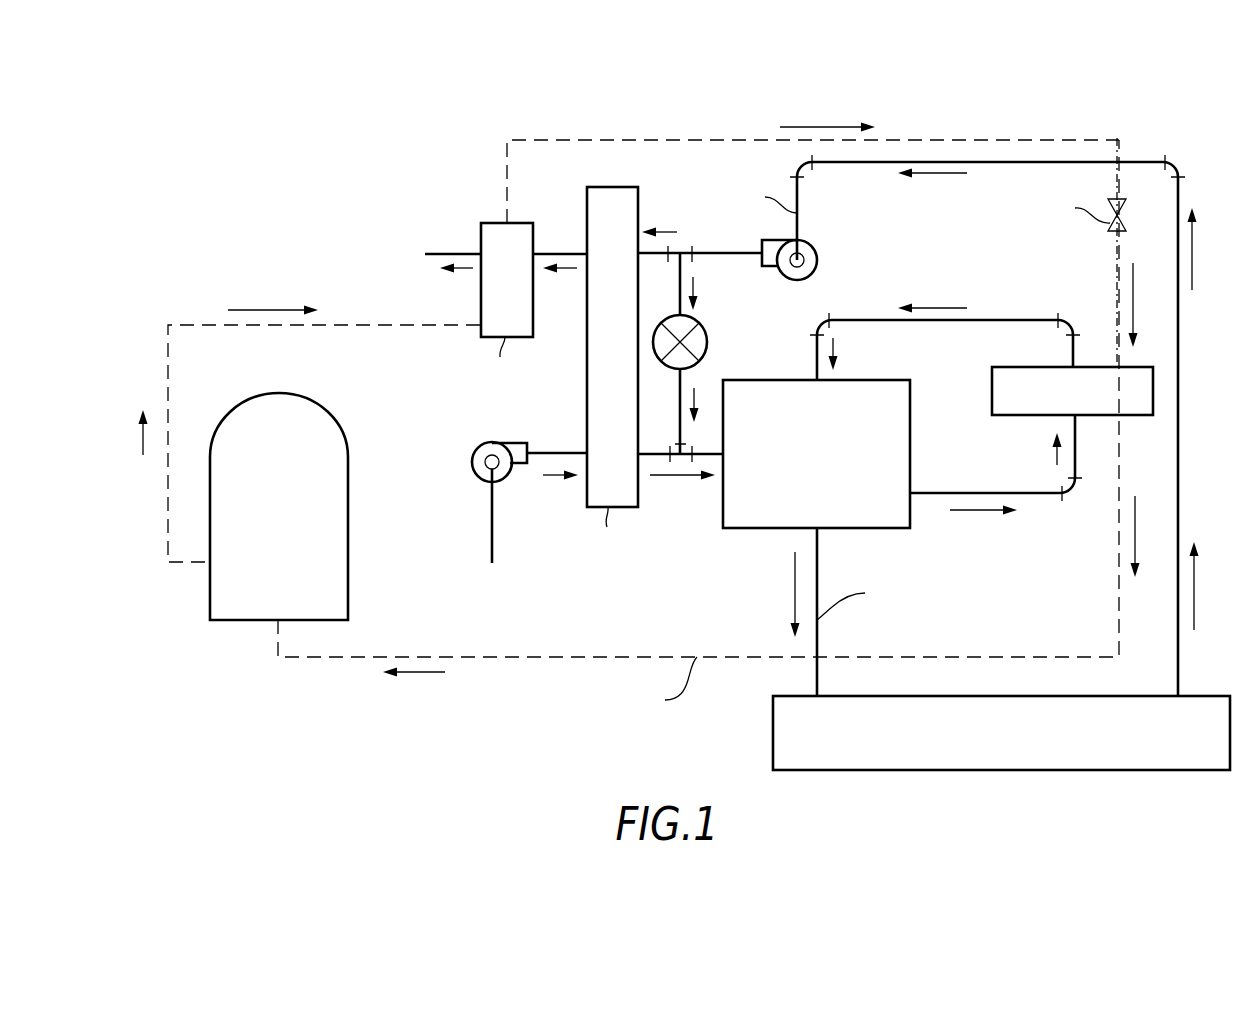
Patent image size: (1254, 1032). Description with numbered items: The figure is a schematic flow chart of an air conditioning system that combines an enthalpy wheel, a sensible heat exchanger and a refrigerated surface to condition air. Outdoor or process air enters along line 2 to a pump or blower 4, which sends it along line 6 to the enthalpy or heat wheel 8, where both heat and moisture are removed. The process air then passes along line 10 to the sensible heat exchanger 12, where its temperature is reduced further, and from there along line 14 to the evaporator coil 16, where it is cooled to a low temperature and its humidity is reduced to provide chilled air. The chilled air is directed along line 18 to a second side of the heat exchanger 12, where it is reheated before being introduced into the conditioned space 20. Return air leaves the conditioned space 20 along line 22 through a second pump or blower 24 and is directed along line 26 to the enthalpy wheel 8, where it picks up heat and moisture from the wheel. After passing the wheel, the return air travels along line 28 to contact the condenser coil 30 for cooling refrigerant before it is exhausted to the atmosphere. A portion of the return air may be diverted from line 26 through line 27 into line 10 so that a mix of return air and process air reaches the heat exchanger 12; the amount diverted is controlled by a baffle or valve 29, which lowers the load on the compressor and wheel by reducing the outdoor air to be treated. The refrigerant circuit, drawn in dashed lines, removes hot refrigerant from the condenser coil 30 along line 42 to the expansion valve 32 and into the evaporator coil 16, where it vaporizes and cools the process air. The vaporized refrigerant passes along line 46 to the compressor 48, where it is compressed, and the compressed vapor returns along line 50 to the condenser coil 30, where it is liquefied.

The line 2 is at (492, 514).
The pump or blower 4 is at (478, 450).
The line 6 is at (557, 453).
The enthalpy or heat wheel 8 is at (587, 337).
The line 10 is at (655, 447).
The sensible heat exchanger 12 is at (742, 528).
The line 14 is at (1018, 493).
The evaporator coil 16 is at (992, 375).
The line 18 is at (1020, 320).
The conditioned space 20 is at (1150, 696).
The line 22 is at (1181, 365).
The pump or blower 24 is at (815, 242).
The line 26 is at (715, 253).
The line 27 is at (680, 295).
The line 28 is at (560, 254).
The baffle or valve 29 is at (705, 330).
The condenser coil 30 is at (497, 223).
The expansion valve 32 is at (1127, 222).
The line 42 is at (690, 140).
The line 46 is at (648, 657).
The compressor 48 is at (333, 415).
The line 50 is at (210, 325).